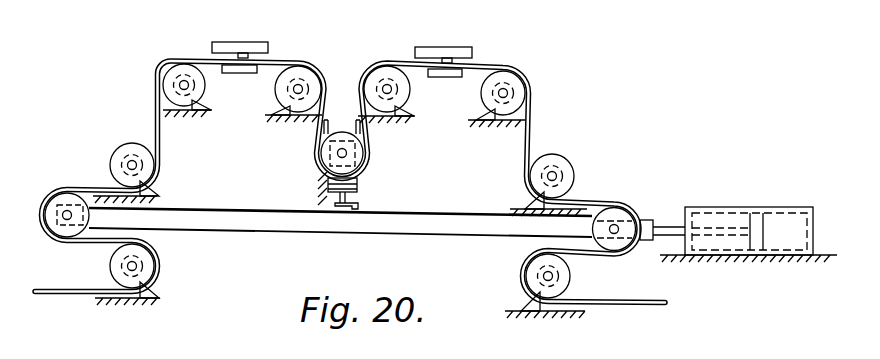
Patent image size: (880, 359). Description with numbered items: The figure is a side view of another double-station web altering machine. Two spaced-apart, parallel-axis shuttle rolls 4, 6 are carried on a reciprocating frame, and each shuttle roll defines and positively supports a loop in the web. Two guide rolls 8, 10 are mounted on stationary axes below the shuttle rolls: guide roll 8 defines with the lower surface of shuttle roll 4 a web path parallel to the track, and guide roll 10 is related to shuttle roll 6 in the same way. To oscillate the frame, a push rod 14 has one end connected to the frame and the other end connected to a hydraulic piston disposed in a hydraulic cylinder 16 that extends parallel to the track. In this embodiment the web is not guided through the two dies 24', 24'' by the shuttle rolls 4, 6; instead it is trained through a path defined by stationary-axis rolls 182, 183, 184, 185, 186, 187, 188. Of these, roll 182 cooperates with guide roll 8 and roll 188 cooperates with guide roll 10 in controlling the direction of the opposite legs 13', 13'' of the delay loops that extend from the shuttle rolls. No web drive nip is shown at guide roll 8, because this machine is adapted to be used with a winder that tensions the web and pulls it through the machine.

The shuttle roll 6 is at (60, 189).
The shuttle roll 4 is at (632, 211).
The guide roll 8 is at (524, 271).
The guide roll 10 is at (147, 264).
The leg of delay loop 13' is at (350, 246).
The leg of delay loop 13'' is at (354, 157).
The push rod 14 is at (667, 226).
The hydraulic cylinder 16 is at (789, 207).
The die 24' is at (452, 41).
The die 24'' is at (248, 36).
The stationary axis roll 182 is at (559, 156).
The stationary axis roll 183 is at (516, 80).
The stationary axis roll 184 is at (389, 69).
The stationary axis roll 185 is at (320, 162).
The stationary axis roll 186 is at (305, 70).
The stationary axis roll 187 is at (181, 64).
The stationary axis roll 188 is at (127, 144).